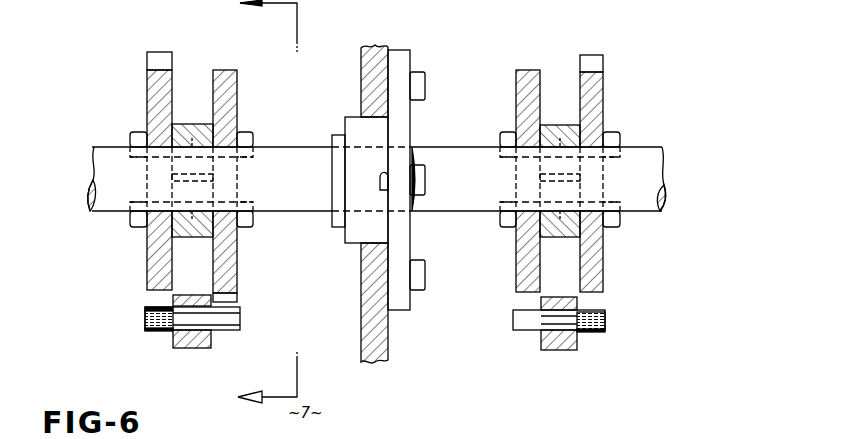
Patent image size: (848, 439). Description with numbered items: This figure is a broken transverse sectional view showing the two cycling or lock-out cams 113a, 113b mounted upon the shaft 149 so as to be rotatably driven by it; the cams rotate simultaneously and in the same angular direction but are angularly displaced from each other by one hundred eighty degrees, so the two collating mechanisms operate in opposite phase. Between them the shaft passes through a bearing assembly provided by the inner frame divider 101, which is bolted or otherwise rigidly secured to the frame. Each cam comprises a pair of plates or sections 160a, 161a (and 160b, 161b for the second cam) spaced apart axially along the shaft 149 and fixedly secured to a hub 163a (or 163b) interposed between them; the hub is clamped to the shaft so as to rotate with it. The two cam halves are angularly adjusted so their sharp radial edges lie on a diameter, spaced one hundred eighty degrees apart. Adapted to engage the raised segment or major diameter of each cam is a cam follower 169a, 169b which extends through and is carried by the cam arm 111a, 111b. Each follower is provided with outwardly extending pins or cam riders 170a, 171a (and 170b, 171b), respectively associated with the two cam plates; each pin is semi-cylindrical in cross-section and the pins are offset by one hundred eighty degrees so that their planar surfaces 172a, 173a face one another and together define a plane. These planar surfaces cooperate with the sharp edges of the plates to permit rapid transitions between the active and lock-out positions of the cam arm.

The inner frame divider 101 is at (382, 44).
The cam arm 111a is at (190, 348).
The cam arm 111b is at (562, 350).
The cycling cam 113a is at (145, 256).
The cycling cam 113b is at (566, 62).
The shaft 149 is at (90, 208).
The cam plate 160a is at (233, 103).
The cam plate 160b is at (516, 80).
The cam plate 161a is at (147, 93).
The cam plate 161b is at (598, 95).
The hub 163a is at (200, 236).
The hub 163b is at (547, 236).
The cam follower 169a is at (142, 337).
The cam follower 169b is at (618, 321).
The pin 170a is at (240, 319).
The pin 170b is at (527, 332).
The pin 171a is at (145, 324).
The pin 171b is at (594, 333).
The planar surface 172a is at (236, 330).
The planar surface 173a is at (150, 312).